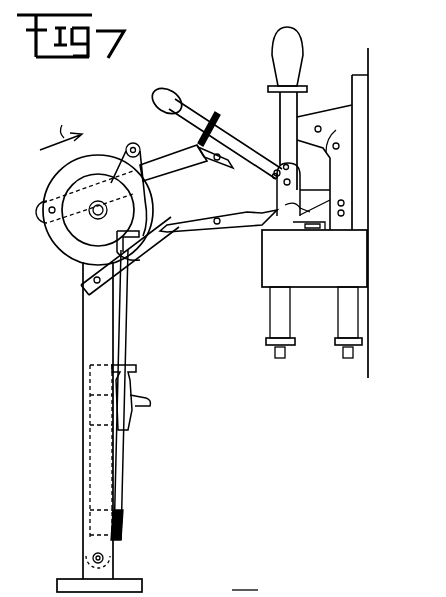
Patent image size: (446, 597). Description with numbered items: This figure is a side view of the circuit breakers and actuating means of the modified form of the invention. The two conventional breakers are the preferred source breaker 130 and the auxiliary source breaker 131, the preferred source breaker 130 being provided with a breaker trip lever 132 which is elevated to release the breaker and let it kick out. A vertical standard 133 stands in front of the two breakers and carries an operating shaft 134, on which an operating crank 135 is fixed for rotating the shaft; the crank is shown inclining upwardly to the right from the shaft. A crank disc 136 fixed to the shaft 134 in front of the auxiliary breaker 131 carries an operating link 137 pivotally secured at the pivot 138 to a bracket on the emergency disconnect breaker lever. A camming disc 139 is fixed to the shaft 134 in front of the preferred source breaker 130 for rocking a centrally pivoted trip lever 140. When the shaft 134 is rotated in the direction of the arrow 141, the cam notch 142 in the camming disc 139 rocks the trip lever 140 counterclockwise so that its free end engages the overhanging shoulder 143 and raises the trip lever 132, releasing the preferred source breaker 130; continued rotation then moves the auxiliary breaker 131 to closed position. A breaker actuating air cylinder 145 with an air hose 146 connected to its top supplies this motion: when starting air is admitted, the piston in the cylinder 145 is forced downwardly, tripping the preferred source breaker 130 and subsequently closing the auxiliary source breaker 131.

The preferred source breaker 130 is at (299, 103).
The auxiliary source breaker 131 is at (229, 139).
The breaker trip lever 132 is at (325, 226).
The vertical standard 133 is at (83, 339).
The operating shaft 134 is at (92, 218).
The operating crank 135 is at (125, 161).
The crank disc 136 is at (63, 181).
The operating link 137 is at (178, 160).
The pivot 138 is at (214, 160).
The camming disc 139 is at (73, 228).
The trip lever 140 is at (204, 216).
The arrow 141 is at (61, 130).
The cam notch 142 is at (150, 262).
The overhanging shoulder 143 is at (292, 189).
The breaker actuating air cylinder 145 is at (125, 447).
The air hose 146 is at (150, 396).